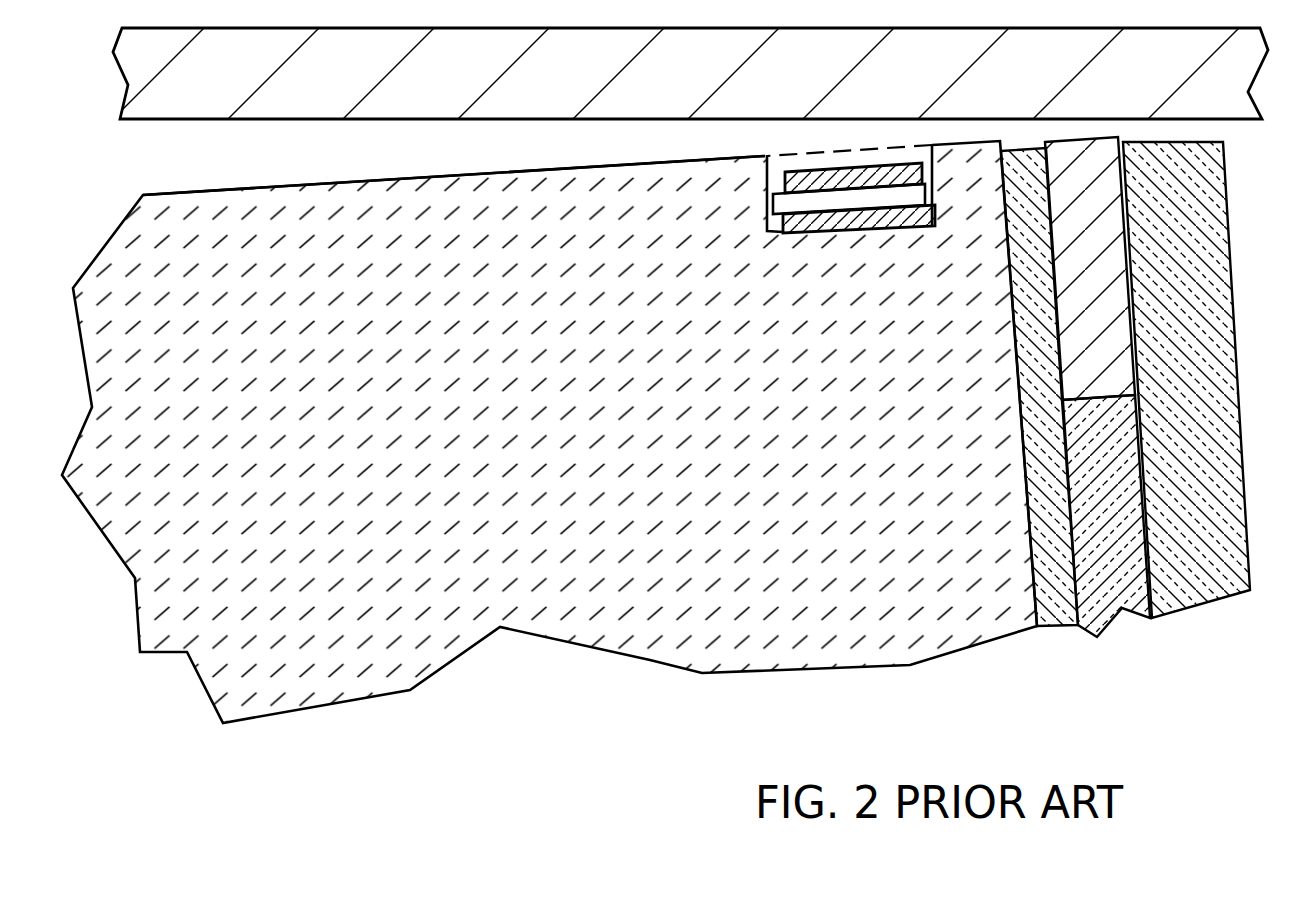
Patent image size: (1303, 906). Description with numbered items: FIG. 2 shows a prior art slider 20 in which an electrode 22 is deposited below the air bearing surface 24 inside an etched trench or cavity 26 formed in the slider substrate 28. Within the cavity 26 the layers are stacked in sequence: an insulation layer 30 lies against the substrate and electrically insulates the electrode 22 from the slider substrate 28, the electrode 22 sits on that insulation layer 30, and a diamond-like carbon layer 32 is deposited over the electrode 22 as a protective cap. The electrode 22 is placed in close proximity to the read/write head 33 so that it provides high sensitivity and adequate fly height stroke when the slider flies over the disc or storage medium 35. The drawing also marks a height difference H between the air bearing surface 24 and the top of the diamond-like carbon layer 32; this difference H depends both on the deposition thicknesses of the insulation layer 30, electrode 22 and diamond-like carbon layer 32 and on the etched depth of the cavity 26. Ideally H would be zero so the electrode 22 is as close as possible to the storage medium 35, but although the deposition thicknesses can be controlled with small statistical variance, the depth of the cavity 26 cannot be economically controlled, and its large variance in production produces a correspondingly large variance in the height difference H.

The slider 20 is at (673, 410).
The electrode 22 is at (775, 207).
The air bearing surface 24 is at (447, 176).
The cavity 26 is at (780, 233).
The slider substrate 28 is at (575, 481).
The insulation layer 30 is at (775, 227).
The diamond-like carbon layer 32 is at (787, 180).
The read/write head 33 is at (1092, 205).
The storage medium 35 is at (1118, 88).
The height difference H is at (867, 305).